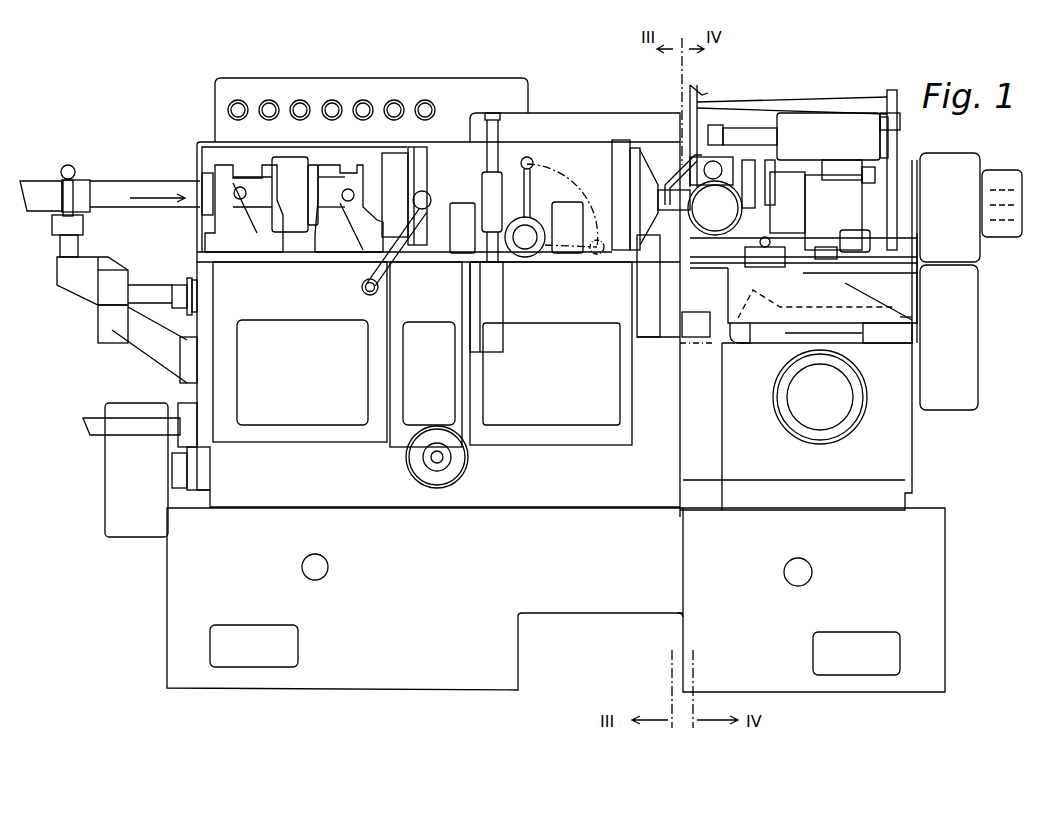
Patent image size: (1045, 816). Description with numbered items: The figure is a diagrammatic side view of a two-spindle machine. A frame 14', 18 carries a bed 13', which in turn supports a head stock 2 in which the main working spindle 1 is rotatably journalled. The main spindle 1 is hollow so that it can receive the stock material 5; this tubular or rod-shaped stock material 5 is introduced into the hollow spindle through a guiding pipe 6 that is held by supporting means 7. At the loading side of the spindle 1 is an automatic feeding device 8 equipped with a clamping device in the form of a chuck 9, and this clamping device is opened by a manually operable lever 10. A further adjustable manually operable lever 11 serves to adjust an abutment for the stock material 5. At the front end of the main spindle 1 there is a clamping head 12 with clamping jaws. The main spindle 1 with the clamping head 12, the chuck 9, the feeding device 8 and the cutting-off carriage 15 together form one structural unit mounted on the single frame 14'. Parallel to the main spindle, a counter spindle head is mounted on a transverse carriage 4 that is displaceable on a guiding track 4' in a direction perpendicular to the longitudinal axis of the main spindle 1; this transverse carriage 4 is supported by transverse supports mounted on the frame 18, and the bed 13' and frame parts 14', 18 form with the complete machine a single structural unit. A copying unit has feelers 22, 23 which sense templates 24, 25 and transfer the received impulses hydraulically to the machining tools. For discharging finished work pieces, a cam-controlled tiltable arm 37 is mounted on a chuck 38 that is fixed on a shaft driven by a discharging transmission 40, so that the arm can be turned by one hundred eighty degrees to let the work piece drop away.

The main working spindle 1 is at (374, 185).
The head stock 2 is at (338, 256).
The transverse carriage 4 is at (832, 284).
The guiding track 4' is at (919, 320).
The stock material 5 is at (110, 188).
The guiding pipe 6 is at (35, 188).
The supporting means 7 is at (70, 314).
The automatic feeding device 8 is at (232, 222).
The chuck 9 is at (285, 178).
The manually operable lever 10 is at (405, 168).
The adjustable manually operable lever 11 is at (530, 215).
The clamping head 12 is at (645, 182).
The bed 13' is at (302, 372).
The frame 14' is at (405, 599).
The cutting-off carriage 15 is at (658, 292).
The frame 18 is at (930, 581).
The feeler 22 is at (848, 244).
The feeler 23 is at (768, 237).
The template 24 is at (828, 245).
The template 25 is at (752, 197).
The tiltable arm 37 is at (677, 167).
The chuck 38 is at (716, 125).
The discharging transmission 40 is at (848, 122).